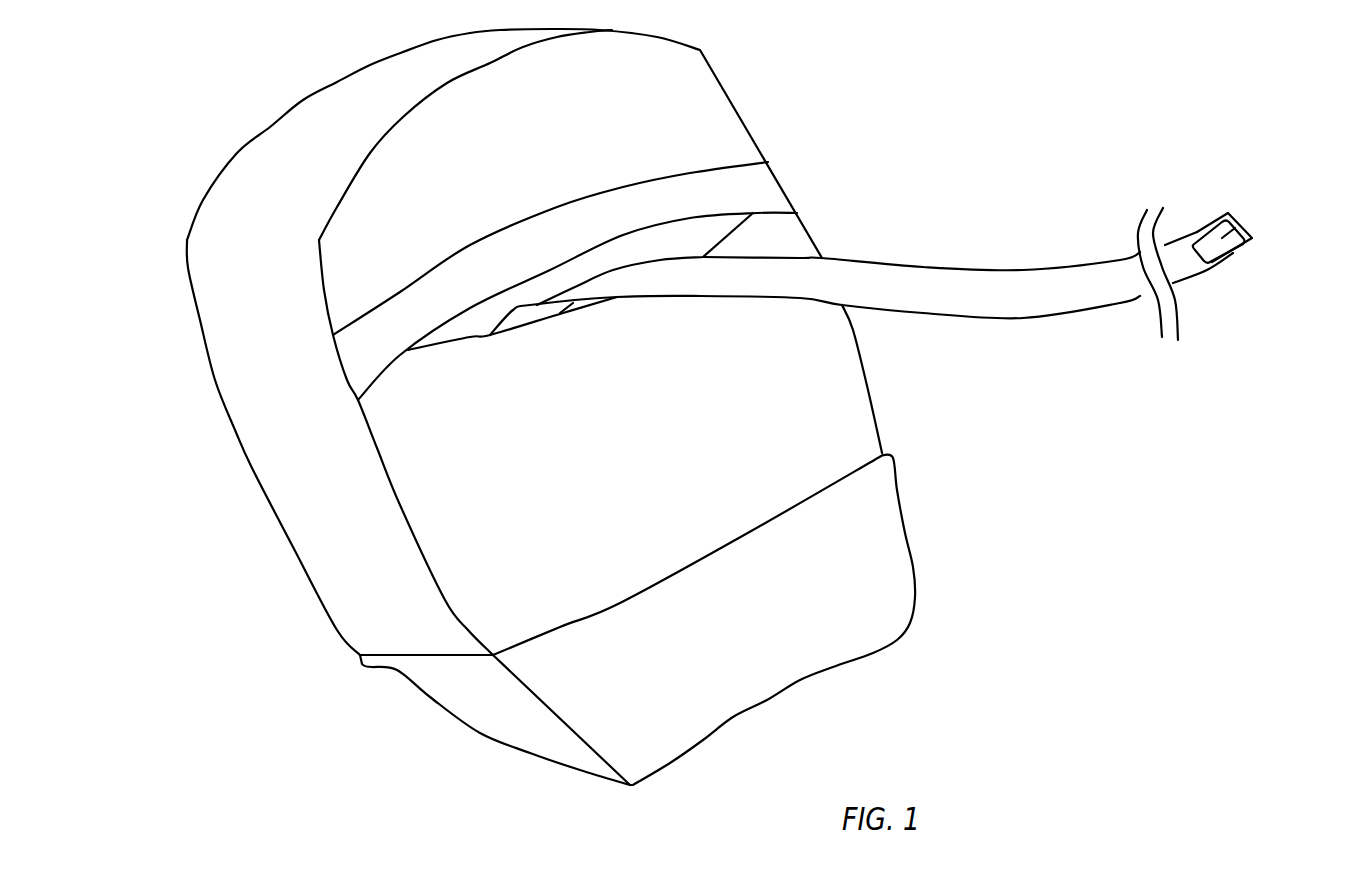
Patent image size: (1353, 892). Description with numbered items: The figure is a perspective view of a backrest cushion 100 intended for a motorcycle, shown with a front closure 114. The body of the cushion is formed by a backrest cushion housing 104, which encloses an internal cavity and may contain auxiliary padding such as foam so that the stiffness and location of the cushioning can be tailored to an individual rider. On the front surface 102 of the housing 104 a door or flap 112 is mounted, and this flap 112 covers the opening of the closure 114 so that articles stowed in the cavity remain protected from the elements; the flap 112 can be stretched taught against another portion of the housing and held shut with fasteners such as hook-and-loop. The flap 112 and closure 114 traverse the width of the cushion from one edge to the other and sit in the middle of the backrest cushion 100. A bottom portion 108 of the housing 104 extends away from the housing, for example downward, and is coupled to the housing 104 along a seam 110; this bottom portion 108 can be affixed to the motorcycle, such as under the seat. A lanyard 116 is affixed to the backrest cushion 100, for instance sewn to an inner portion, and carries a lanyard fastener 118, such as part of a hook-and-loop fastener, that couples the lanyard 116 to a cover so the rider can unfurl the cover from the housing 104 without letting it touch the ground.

The backrest cushion 100 is at (186, 166).
The front surface 102 is at (462, 522).
The backrest cushion housing 104 is at (252, 468).
The bottom portion 108 is at (503, 730).
The seam 110 is at (743, 540).
The flap 112 is at (753, 192).
The front closure 114 is at (463, 356).
The lanyard 116 is at (910, 262).
The lanyard fastener 118 is at (1240, 226).